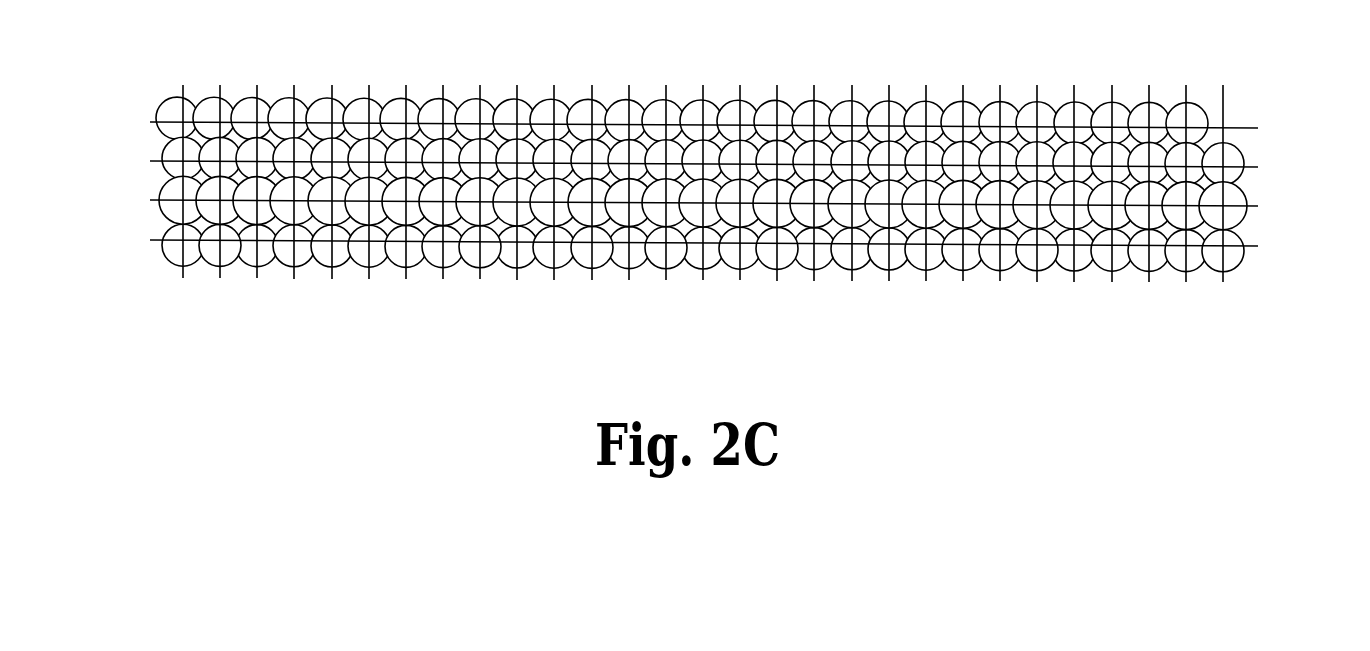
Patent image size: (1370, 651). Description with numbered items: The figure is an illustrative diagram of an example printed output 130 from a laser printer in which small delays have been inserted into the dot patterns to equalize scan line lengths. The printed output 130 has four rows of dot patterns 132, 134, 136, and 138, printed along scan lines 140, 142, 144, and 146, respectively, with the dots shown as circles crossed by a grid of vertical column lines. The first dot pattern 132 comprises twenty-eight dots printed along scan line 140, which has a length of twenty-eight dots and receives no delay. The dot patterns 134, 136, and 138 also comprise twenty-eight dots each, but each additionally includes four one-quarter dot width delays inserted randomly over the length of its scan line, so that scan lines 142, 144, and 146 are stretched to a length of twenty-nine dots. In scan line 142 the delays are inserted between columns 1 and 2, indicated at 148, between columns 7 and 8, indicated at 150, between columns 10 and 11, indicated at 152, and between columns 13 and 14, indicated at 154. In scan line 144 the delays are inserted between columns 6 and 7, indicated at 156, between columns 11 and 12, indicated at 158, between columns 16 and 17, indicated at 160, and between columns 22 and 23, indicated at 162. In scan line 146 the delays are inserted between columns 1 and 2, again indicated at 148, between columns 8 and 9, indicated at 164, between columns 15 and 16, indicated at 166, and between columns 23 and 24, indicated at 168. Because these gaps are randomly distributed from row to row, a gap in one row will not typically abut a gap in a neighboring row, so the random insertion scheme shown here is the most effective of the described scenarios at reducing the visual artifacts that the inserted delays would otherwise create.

The printed output 130 is at (458, 70).
The dot pattern 132 is at (152, 100).
The dot pattern 134 is at (148, 146).
The dot pattern 136 is at (148, 182).
The dot pattern 138 is at (148, 226).
The scan line 140 is at (1253, 129).
The scan line 142 is at (1253, 167).
The scan line 144 is at (1253, 207).
The scan line 146 is at (1253, 247).
The one-quarter dot width delay 148 is at (200, 302).
The one-quarter dot width delay 150 is at (427, 303).
The one-quarter dot width delay 152 is at (541, 306).
The one-quarter dot width delay 154 is at (647, 305).
The one-quarter dot width delay 156 is at (390, 303).
The one-quarter dot width delay 158 is at (573, 306).
The one-quarter dot width delay 160 is at (758, 305).
The one-quarter dot width delay 162 is at (983, 308).
The one-quarter dot width delay 164 is at (462, 307).
The one-quarter dot width delay 166 is at (722, 305).
The one-quarter dot width delay 168 is at (1018, 312).
The column 1 is at (183, 198).
The column 2 is at (220, 198).
The column 6 is at (369, 198).
The column 7 is at (406, 198).
The column 8 is at (443, 198).
The column 9 is at (480, 198).
The column 10 is at (516, 199).
The column 11 is at (553, 199).
The column 12 is at (591, 199).
The column 13 is at (628, 199).
The column 14 is at (665, 199).
The column 15 is at (702, 199).
The column 16 is at (739, 199).
The column 17 is at (776, 199).
The column 22 is at (962, 199).
The column 23 is at (999, 199).
The column 24 is at (1036, 200).